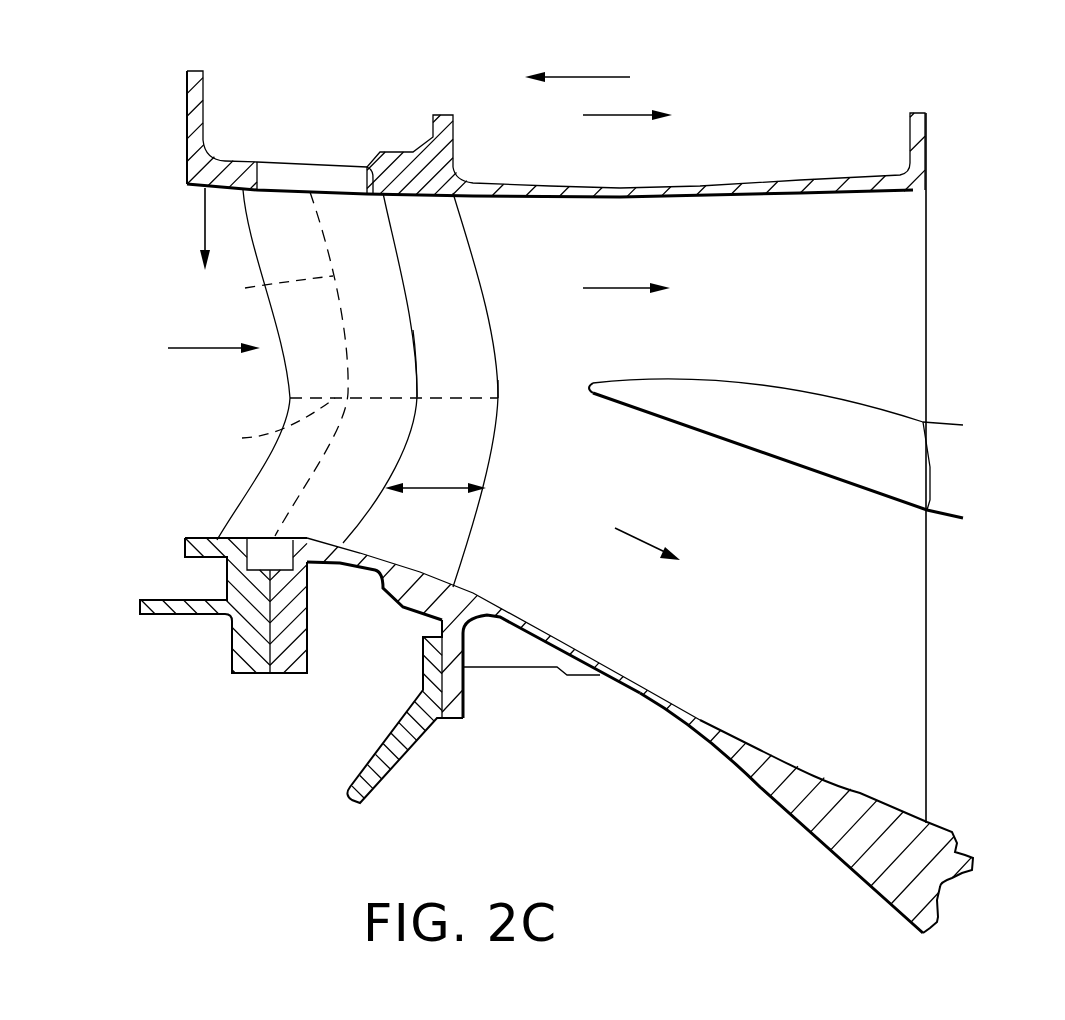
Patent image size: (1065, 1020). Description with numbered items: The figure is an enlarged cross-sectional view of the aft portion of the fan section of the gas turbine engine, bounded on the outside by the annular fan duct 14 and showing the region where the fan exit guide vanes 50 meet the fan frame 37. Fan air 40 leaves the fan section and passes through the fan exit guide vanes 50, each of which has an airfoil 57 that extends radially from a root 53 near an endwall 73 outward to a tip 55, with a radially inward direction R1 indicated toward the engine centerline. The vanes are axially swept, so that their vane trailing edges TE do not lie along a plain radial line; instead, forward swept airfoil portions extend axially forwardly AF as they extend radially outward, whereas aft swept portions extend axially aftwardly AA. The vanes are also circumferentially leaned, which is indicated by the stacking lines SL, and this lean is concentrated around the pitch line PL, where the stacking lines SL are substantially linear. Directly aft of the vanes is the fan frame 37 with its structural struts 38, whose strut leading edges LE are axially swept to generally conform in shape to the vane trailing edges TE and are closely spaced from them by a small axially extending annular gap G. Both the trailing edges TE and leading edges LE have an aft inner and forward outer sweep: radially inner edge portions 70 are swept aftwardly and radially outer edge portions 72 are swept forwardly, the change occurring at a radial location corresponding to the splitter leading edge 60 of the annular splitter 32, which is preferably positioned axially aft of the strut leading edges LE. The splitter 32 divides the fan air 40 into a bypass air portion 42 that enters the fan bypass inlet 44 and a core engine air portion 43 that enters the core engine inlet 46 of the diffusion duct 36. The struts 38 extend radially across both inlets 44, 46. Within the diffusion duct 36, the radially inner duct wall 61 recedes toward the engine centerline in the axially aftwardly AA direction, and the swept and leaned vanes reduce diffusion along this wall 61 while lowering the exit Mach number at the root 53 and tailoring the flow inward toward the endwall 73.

The annular fan duct 14 is at (188, 185).
The annular splitter 32 is at (853, 404).
The diffusion duct 36 is at (863, 797).
The fan frame 37 is at (910, 142).
The structural struts 38 is at (928, 280).
The fan air 40 is at (197, 348).
The bypass air portion 42 is at (622, 288).
The core engine air portion 43 is at (637, 540).
The fan bypass inlet 44 is at (744, 260).
The core engine inlet 46 is at (663, 482).
The fan exit guide vanes 50 is at (313, 207).
The root 53 is at (235, 540).
The tip 55 is at (262, 194).
The airfoil 57 is at (352, 220).
The splitter leading edge 60 is at (593, 388).
The radially inner duct wall 61 is at (473, 593).
The radially inner edge portions 70 is at (380, 500).
The radially outer edge portions 72 is at (390, 230).
The endwall 73 is at (300, 548).
The axially forwardly direction AF is at (573, 77).
The axially aftwardly direction AA is at (617, 115).
The radius R1 is at (205, 218).
The stacking lines SL is at (273, 287).
The pitch line PL is at (270, 426).
The vane trailing edges TE is at (404, 298).
The strut leading edges LE is at (498, 390).
The annular gap G is at (437, 487).